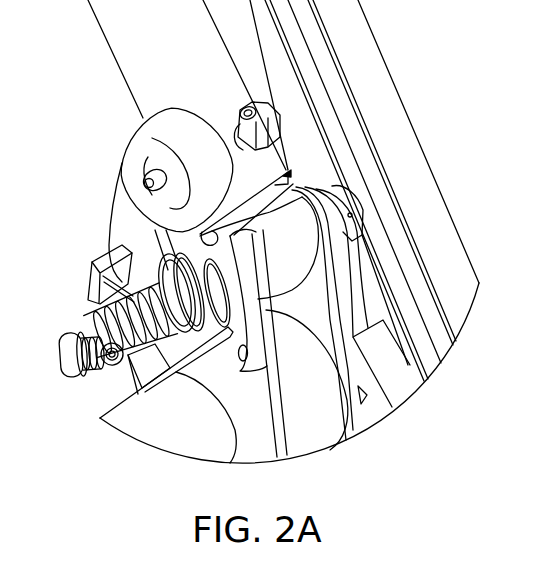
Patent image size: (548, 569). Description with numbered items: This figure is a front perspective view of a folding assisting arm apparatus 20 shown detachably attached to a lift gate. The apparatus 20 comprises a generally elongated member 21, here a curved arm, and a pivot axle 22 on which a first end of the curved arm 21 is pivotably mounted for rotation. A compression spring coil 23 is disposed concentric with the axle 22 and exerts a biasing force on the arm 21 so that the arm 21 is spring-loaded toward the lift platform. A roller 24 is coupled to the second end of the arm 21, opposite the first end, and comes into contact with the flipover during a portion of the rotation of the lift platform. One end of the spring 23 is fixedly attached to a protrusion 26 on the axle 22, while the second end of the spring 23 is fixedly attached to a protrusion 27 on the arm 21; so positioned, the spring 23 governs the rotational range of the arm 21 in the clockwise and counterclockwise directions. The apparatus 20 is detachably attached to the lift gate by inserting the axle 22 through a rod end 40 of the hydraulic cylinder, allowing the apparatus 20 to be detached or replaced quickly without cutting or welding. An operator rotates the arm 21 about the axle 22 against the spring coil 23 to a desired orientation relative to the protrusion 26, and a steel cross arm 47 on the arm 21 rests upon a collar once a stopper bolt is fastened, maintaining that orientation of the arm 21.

The folding assisting arm apparatus 20 is at (122, 121).
The elongated member 21 is at (122, 199).
The pivot axle 22 is at (80, 360).
The compression spring coil 23 is at (142, 393).
The roller 24 is at (167, 123).
The protrusion 26 is at (110, 374).
The protrusion 27 is at (92, 277).
The rod end 40 is at (295, 258).
The steel cross arm 47 is at (179, 372).